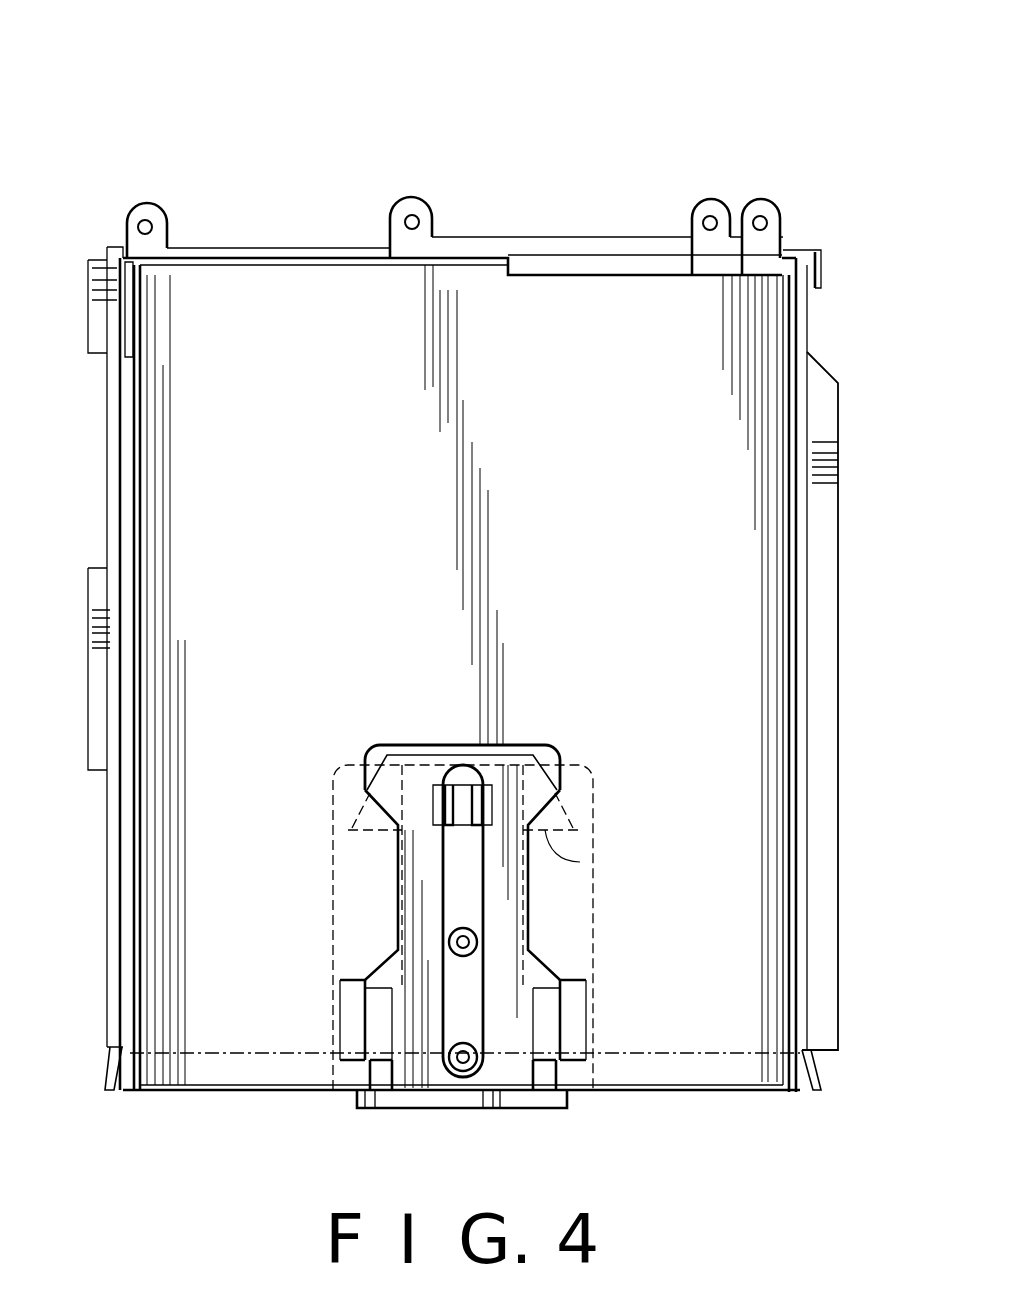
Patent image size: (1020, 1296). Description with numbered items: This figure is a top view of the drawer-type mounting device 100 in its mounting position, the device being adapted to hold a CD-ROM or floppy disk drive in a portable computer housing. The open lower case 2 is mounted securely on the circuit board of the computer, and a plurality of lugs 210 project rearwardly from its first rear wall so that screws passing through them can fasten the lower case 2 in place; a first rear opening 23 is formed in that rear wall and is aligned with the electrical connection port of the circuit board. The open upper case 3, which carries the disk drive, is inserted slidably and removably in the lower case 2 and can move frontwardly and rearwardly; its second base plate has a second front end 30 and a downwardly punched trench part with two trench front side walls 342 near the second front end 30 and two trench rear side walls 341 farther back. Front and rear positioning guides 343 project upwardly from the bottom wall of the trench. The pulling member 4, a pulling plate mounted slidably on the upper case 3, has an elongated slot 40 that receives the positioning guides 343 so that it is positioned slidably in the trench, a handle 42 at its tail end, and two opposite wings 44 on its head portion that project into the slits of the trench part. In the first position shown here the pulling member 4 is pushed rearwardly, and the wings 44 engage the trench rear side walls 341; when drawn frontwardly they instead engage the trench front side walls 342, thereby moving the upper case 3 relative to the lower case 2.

The drawer-type mounting device 100 is at (372, 143).
The lower case 2 is at (845, 467).
The upper case 3 is at (797, 332).
The pulling member 4 is at (380, 918).
The first rear opening 23 is at (292, 248).
The second front end 30 is at (275, 1100).
The elongated slot 40 is at (452, 882).
The handle 42 is at (503, 1100).
The wings 44 is at (580, 862).
The lugs 210 is at (149, 218).
The trench rear side walls 341 is at (550, 753).
The trench front side walls 342 is at (373, 993).
The positioning guides 343 is at (477, 937).